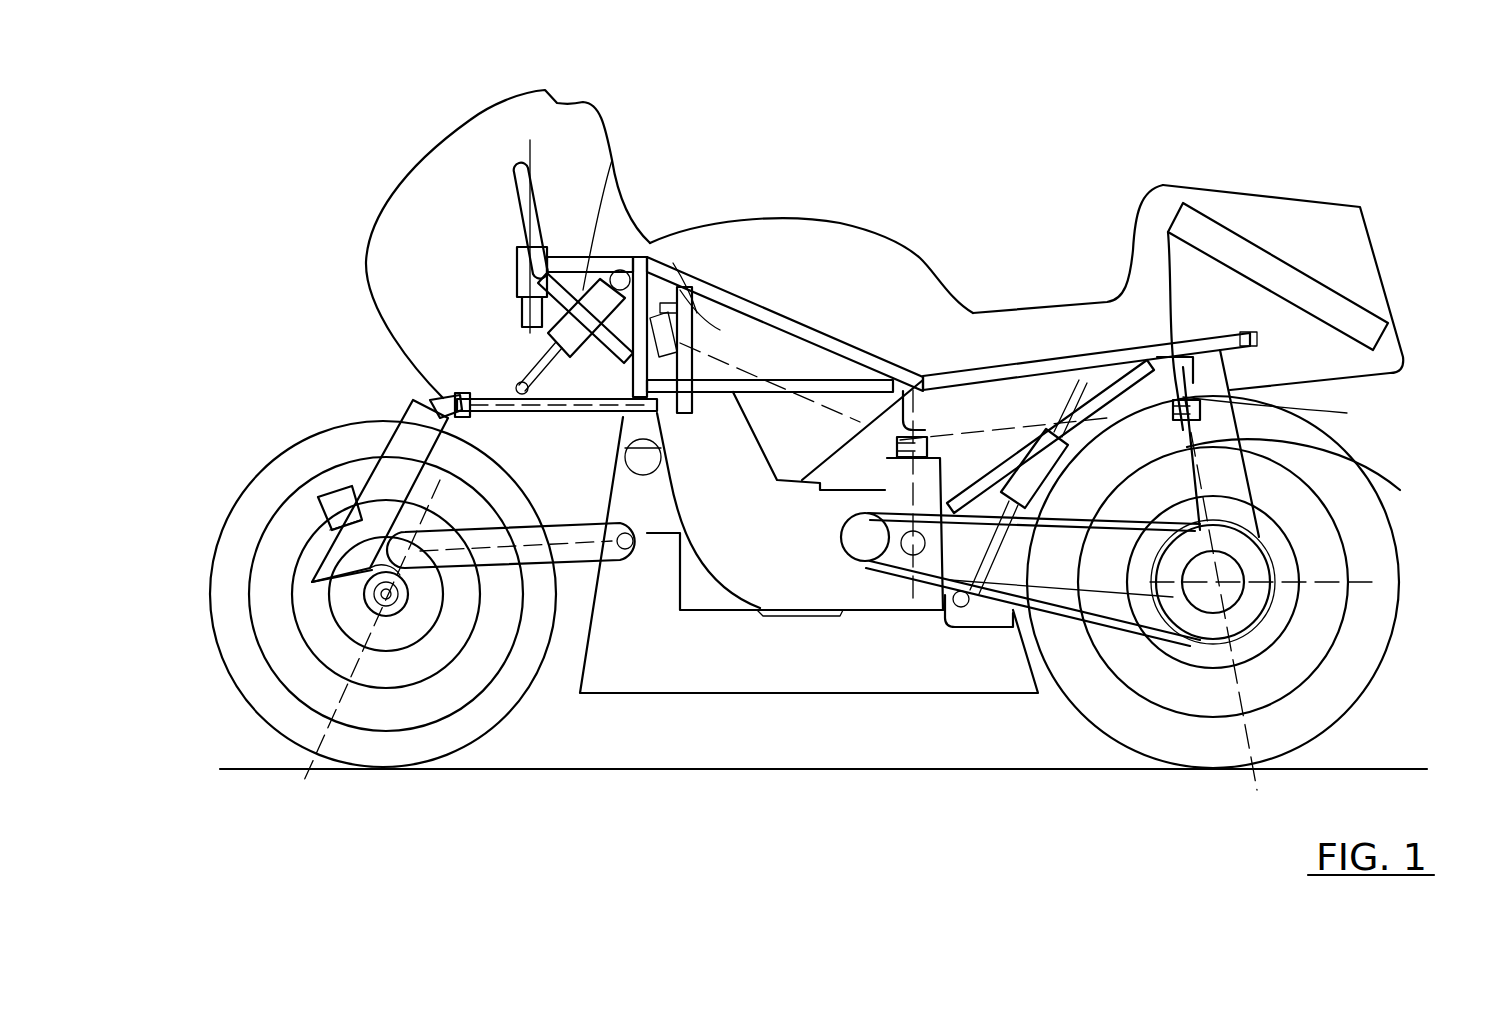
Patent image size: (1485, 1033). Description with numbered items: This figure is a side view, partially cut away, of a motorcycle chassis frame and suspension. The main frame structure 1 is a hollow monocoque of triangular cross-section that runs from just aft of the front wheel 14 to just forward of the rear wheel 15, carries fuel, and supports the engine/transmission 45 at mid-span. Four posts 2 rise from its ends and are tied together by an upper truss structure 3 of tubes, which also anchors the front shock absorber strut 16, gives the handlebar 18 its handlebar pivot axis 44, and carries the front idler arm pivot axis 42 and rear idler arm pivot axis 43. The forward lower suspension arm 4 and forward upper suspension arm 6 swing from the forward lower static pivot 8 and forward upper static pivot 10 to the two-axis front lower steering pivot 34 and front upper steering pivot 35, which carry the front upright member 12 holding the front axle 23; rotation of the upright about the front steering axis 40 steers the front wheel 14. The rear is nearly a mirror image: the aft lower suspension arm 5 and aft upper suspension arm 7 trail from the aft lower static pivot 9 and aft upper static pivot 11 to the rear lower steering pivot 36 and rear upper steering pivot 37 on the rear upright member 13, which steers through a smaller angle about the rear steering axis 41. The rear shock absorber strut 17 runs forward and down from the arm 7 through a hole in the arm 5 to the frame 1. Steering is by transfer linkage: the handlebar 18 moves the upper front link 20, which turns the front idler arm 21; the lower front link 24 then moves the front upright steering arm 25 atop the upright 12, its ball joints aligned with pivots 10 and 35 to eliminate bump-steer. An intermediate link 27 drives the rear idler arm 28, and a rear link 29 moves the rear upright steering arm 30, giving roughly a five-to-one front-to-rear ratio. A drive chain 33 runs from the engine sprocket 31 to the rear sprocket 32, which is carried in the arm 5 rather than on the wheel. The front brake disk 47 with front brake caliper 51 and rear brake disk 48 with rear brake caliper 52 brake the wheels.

The main frame structure 1 is at (835, 695).
The posts 2 is at (633, 428).
The upper truss structure 3 is at (790, 325).
The forward lower suspension arm 4 is at (530, 548).
The aft lower suspension arm 5 is at (1140, 600).
The forward upper suspension arm 6 is at (577, 375).
The aft upper suspension arm 7 is at (1030, 392).
The forward lower static pivot 8 is at (605, 535).
The aft lower static pivot 9 is at (517, 270).
The forward upper static pivot 10 is at (553, 338).
The aft upper static pivot 11 is at (940, 385).
The front upright member 12 is at (323, 553).
The rear upright member 13 is at (1377, 477).
The front wheel 14 is at (277, 727).
The rear wheel 15 is at (1157, 765).
The front shock absorber strut 16 is at (520, 337).
The rear shock absorber strut 17 is at (1085, 580).
The handlebar 18 is at (548, 210).
The upper front link 20 is at (583, 293).
The front idler arm 21 is at (703, 290).
The front axle 23 is at (380, 596).
The lower front link 24 is at (520, 410).
The front upright steering arm 25 is at (447, 395).
The intermediate link 27 is at (740, 367).
The rear idler arm 28 is at (887, 455).
The rear link 29 is at (1103, 420).
The rear upright steering arm 30 is at (1347, 413).
The engine sprocket 31 is at (820, 560).
The rear sprocket 32 is at (1172, 615).
The drive chain 33 is at (1000, 627).
The front lower steering pivot 34 is at (432, 700).
The front upper steering pivot 35 is at (447, 398).
The rear lower steering pivot 36 is at (1395, 562).
The rear upper steering pivot 37 is at (1193, 210).
The front steering axis 40 is at (327, 727).
The rear steering axis 41 is at (1248, 743).
The front idler arm pivot axis 42 is at (690, 293).
The rear idler arm pivot axis 43 is at (913, 380).
The handlebar pivot axis 44 is at (530, 150).
The engine/transmission 45 is at (790, 470).
The front brake disk 47 is at (310, 648).
The rear brake disk 48 is at (1213, 640).
The front brake caliper 51 is at (330, 500).
The rear brake caliper 52 is at (1380, 500).